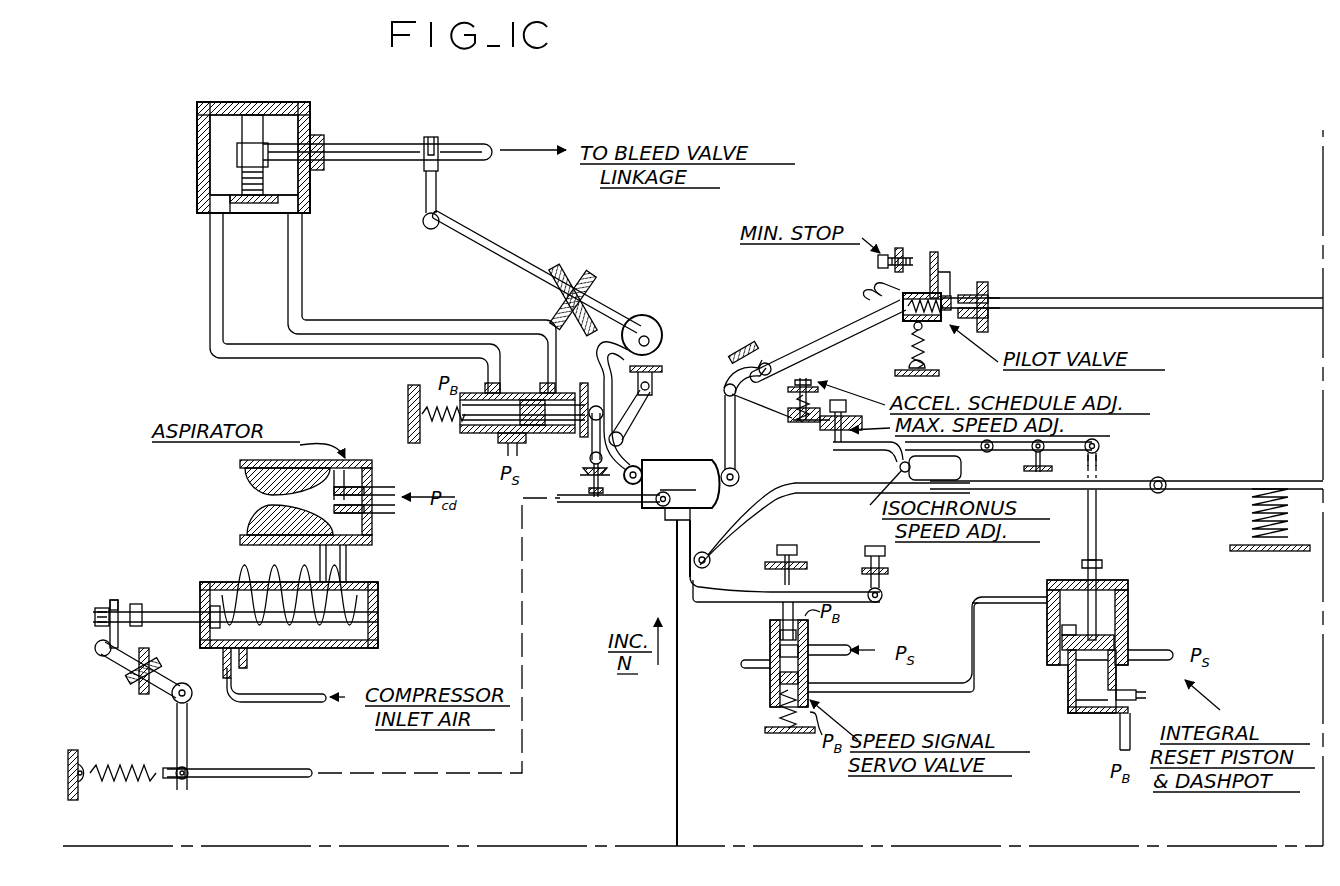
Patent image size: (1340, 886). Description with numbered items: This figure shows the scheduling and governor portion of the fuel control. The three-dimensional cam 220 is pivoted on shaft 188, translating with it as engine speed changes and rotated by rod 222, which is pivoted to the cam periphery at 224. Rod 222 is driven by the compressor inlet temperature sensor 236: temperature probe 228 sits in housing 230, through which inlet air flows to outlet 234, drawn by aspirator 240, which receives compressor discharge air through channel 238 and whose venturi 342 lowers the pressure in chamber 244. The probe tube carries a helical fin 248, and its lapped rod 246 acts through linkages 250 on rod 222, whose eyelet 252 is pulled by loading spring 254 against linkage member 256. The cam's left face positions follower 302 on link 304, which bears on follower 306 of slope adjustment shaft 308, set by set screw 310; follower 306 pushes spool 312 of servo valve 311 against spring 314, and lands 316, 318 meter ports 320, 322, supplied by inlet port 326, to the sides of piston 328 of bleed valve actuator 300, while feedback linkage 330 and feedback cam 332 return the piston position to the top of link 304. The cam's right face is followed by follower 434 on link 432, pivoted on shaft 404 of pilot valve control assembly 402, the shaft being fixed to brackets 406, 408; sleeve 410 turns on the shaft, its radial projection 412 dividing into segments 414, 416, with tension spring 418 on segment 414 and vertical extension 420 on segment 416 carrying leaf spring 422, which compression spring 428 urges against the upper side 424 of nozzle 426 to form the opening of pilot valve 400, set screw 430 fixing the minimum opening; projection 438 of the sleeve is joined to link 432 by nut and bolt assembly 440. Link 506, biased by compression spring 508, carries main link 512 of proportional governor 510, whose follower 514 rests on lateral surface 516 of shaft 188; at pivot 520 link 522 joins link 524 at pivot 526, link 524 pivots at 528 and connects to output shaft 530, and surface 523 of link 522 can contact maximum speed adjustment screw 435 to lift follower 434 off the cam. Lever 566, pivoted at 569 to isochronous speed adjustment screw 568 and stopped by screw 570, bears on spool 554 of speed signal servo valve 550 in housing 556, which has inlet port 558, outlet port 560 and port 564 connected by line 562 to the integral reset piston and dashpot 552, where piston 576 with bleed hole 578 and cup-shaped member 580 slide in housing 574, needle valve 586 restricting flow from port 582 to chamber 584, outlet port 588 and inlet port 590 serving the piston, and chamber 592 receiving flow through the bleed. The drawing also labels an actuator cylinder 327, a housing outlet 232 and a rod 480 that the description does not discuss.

The shaft 188 is at (677, 803).
The 3D cam 220 is at (681, 490).
The rod 222 is at (633, 512).
The pivot 224 is at (640, 505).
The temperature probe 228 is at (372, 612).
The housing 230 is at (380, 585).
The outlet port 232 is at (250, 652).
The outlet 234 is at (350, 568).
The compressor inlet temperature sensor 236 is at (205, 560).
The channel 238 is at (384, 488).
The aspirator 240 is at (325, 470).
The chamber 244 is at (348, 475).
The lapped rod 246 is at (168, 605).
The helical fin 248 is at (292, 605).
The linkages 250 is at (92, 672).
The eyelet 252 is at (180, 770).
The loading spring 254 is at (118, 771).
The linkage member 256 is at (130, 598).
The compressor interstage bleed valve actuator 300 is at (500, 228).
The follower 302 is at (636, 466).
The link 304 is at (600, 505).
The follower 306 is at (652, 398).
The slope adjustment shaft 308 is at (583, 472).
The set screw 310 is at (594, 500).
The servo valve 311 is at (414, 383).
The spool 312 is at (528, 435).
The spring 314 is at (445, 430).
The land 316 is at (490, 432).
The land 318 is at (578, 428).
The port 320 is at (494, 386).
The port 322 is at (552, 386).
The inlet port 326 is at (500, 447).
The actuator 327 is at (318, 104).
The piston 328 is at (243, 110).
The feedback linkage 330 is at (455, 240).
The feedback cam 332 is at (641, 315).
The venturi 342 is at (265, 495).
The pilot valve 400 is at (958, 290).
The pilot valve control assembly 402 is at (880, 296).
The shaft 404 is at (770, 360).
The bracket 406 is at (738, 348).
The bracket 408 is at (878, 292).
The concentric sleeve 410 is at (810, 290).
The radial projection 412 is at (905, 310).
The segment 414 is at (930, 328).
The segment 416 is at (938, 270).
The tension spring 418 is at (912, 342).
The vertical extension 420 is at (955, 295).
The leaf spring 422 is at (995, 316).
The upper side 424 is at (975, 290).
The nozzle 426 is at (988, 288).
The compression spring 428 is at (913, 260).
The set screw 430 is at (905, 250).
The link 432 is at (722, 380).
The follower 434 is at (760, 468).
The maximum speed adjustment screw 435 is at (834, 446).
The integral projection 438 is at (768, 408).
The spring biased nut and bolt assembly 440 is at (840, 365).
The rod 480 is at (1243, 298).
The pivoted link 506 is at (1240, 480).
The compression spring 508 is at (1258, 508).
The proportional governor 510 is at (1128, 436).
The main link 512 is at (1135, 490).
The follower 514 is at (755, 498).
The lateral projecting surface 516 is at (712, 564).
The pivot 520 is at (870, 496).
The link 522 is at (932, 462).
The surface 523 is at (870, 452).
The link 524 is at (1100, 445).
The pivot 526 is at (1035, 458).
The fixed pivot 528 is at (1088, 486).
The output shaft 530 is at (1100, 462).
The speed signal servo valve device 550 is at (762, 745).
The integral reset piston and dashpot 552 is at (1190, 650).
The lapped spool valve 554 is at (780, 635).
The housing 556 is at (733, 665).
The inlet port 558 is at (806, 650).
The outlet port 560 is at (772, 664).
The interconnecting line 562 is at (876, 692).
The port 564 is at (806, 677).
The lever 566 is at (830, 592).
The isochronous speed adjustment screw 568 is at (890, 572).
The pivot 569 is at (883, 595).
The externally adjustable screw 570 is at (785, 548).
The housing 574 is at (1112, 596).
The piston 576 is at (1105, 635).
The bleed hole 578 is at (1060, 630).
The cup-shaped member 580 is at (1068, 680).
The port 582 is at (1120, 735).
The chamber 584 is at (1068, 697).
The needle valve 586 is at (1140, 697).
The outlet port 588 is at (1060, 588).
The inlet port 590 is at (1135, 655).
The chamber 592 is at (1122, 590).